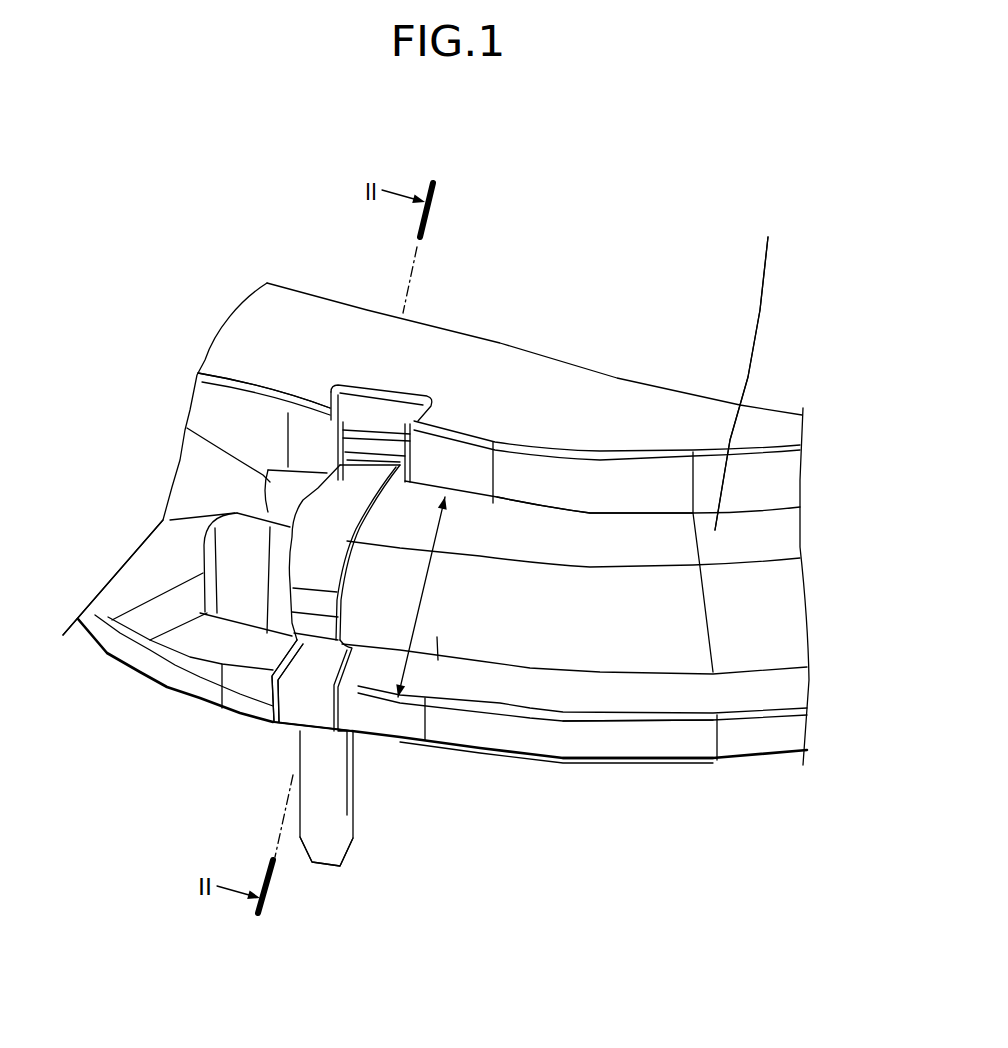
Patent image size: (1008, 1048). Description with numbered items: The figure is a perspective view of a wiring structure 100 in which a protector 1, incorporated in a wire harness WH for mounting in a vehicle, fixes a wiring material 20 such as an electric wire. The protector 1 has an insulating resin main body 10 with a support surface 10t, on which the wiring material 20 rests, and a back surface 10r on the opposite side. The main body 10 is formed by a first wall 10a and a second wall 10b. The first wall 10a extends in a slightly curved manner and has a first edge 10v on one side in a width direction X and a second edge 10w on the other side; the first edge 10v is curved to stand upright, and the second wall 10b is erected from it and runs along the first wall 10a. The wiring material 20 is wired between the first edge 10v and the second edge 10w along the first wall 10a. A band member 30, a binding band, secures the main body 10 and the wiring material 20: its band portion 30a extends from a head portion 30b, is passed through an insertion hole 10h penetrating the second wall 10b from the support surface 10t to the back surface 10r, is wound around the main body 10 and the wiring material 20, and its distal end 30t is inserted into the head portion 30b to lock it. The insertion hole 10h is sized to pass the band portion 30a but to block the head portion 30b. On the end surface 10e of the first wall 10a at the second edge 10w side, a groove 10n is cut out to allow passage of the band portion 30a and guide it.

The wiring structure 100 is at (820, 233).
The protector 1 is at (668, 222).
The wire harness WH is at (553, 167).
The main body 10 is at (125, 210).
The first wall 10a is at (173, 560).
The second wall 10b is at (250, 425).
The first edge 10v is at (247, 490).
The insertion hole 10h is at (381, 406).
The second edge 10w is at (572, 690).
The wiring material 20 is at (768, 570).
The support surface 10t is at (137, 585).
The groove 10n is at (292, 660).
The back surface 10r is at (637, 763).
The end surface 10e is at (688, 743).
The band member 30 is at (450, 793).
The band portion 30a is at (322, 568).
The head portion 30b is at (322, 705).
The distal end 30t is at (327, 880).
The width direction X is at (421, 597).